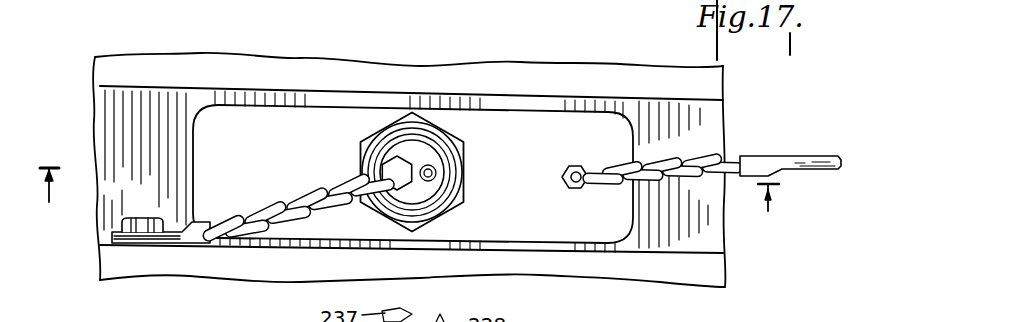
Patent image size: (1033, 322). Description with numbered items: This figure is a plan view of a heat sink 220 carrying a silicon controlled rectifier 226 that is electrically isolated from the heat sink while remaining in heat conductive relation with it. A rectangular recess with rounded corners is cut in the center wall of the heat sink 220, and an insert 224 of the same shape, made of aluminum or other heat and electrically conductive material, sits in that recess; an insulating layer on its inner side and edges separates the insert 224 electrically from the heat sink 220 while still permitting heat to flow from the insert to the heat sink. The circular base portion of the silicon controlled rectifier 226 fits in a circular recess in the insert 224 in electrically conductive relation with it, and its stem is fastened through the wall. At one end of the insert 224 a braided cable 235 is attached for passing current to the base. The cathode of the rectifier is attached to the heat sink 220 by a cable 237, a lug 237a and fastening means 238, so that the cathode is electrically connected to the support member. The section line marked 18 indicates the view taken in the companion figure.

The heat sink 220 is at (660, 273).
The insert 224 is at (555, 230).
The silicon controlled rectifier 226 is at (422, 134).
The braided cable 235 is at (713, 152).
The cable 237 is at (293, 211).
The lug 237a is at (192, 234).
The fastening means 238 is at (143, 220).
The section line 18 is at (406, 204).